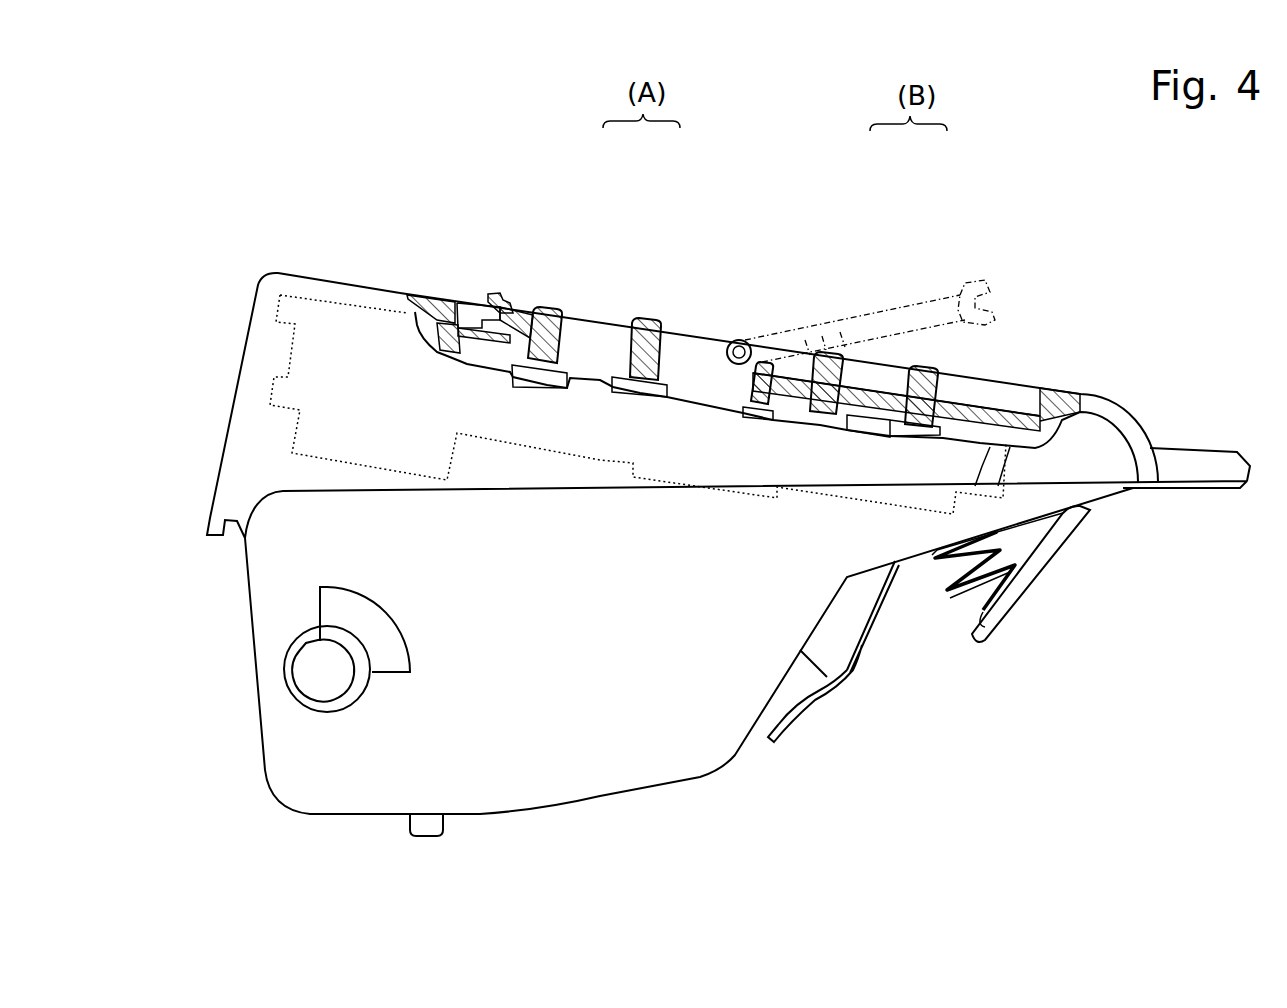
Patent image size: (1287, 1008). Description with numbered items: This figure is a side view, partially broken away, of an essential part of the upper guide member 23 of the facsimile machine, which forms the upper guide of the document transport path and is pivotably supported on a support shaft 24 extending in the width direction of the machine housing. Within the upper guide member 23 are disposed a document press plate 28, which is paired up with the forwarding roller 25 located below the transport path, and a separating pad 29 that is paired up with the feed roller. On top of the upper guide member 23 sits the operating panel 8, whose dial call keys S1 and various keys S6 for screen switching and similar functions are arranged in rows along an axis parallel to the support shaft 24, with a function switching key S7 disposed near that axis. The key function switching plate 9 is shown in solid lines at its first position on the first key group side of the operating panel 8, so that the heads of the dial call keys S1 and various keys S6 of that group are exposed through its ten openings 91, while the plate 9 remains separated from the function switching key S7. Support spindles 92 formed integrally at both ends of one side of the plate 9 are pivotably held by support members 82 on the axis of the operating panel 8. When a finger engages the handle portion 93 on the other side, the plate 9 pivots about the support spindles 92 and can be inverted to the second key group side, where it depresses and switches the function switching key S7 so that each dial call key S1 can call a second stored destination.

The operating panel 8 is at (1058, 389).
The key function switching plate 9 is at (696, 333).
The upper guide member 23 is at (647, 770).
The support shaft 24 is at (317, 680).
The forwarding roller 25 is at (327, 605).
The document press plate 28 is at (1020, 600).
The separating pad 29 is at (798, 702).
The support member 82 is at (738, 340).
The openings 91 is at (535, 307).
The support spindle 92 is at (758, 362).
The handle portion 93 is at (497, 292).
The dial call key S1 is at (657, 319).
The various keys S6 is at (547, 311).
The function switching key S7 is at (757, 358).